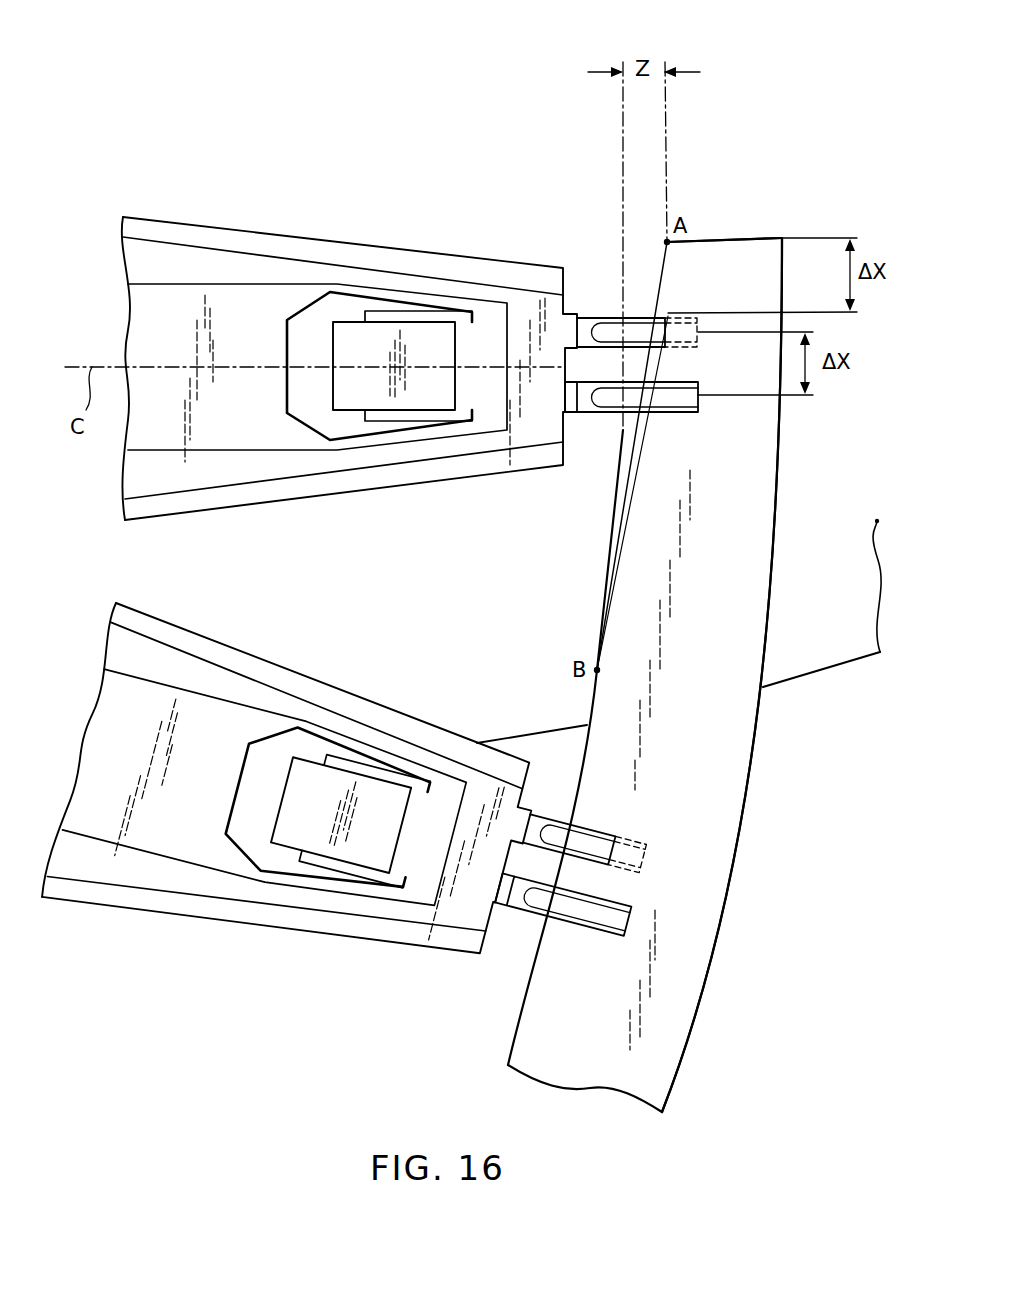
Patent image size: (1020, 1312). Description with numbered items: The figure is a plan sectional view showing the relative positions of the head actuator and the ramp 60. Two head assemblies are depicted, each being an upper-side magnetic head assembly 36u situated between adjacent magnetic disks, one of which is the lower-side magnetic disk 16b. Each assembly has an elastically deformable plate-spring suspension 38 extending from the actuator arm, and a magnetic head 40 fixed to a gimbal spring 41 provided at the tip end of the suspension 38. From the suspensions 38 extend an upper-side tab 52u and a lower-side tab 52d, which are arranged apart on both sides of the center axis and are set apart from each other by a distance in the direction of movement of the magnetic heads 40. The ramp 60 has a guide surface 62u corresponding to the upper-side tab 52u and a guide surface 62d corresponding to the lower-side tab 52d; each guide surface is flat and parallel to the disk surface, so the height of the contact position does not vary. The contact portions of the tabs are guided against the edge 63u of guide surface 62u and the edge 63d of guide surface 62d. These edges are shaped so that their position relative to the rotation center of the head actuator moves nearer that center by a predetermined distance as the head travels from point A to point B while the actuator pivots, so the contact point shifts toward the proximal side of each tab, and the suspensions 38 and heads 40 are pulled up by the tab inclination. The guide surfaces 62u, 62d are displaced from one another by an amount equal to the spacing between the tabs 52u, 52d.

The upper-side magnetic head assembly 36u is at (301, 238).
The suspension 38 is at (221, 258).
The gimbal spring 41 is at (352, 281).
The magnetic head 40 is at (432, 338).
The upper-side tab 52u is at (591, 313).
The lower-side tab 52d is at (590, 418).
The ramp 60 is at (753, 779).
The guide surface 62u is at (745, 238).
The guide surface 62d is at (777, 548).
The edge of guide surface 63u is at (660, 257).
The edge of guide surface 63d is at (632, 480).
The lower-side magnetic disk 16b is at (836, 668).